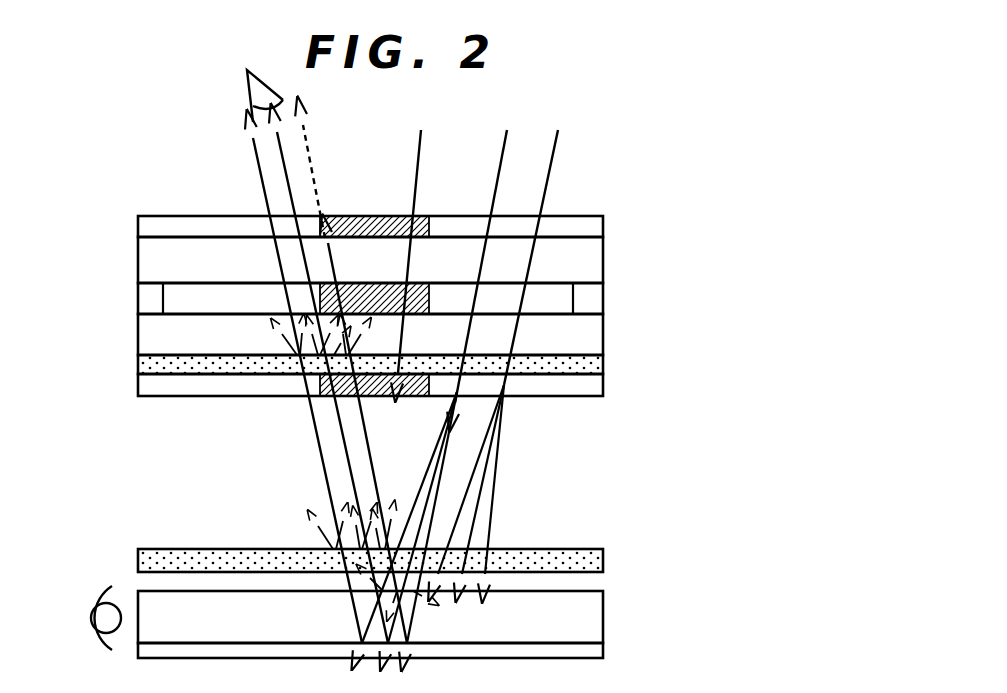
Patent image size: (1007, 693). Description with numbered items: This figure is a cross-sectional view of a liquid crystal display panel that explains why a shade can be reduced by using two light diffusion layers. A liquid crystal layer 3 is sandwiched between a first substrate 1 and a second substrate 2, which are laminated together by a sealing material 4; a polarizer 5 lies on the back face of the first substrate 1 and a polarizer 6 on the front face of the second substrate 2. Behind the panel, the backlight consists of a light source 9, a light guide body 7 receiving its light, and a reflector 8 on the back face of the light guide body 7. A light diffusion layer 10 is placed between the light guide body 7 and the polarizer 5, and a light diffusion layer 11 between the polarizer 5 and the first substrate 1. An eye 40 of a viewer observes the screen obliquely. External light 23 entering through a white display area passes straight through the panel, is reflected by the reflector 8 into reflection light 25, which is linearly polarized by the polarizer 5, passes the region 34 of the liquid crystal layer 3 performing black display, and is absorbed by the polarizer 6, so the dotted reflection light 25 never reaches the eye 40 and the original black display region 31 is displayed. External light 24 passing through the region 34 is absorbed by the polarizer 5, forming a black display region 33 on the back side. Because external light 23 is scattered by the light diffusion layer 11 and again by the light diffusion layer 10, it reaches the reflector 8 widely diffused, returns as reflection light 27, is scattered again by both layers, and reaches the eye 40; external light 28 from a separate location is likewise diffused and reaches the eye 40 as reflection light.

The first substrate 1 is at (595, 333).
The second substrate 2 is at (595, 265).
The liquid crystal layer 3 is at (557, 295).
The sealing material 4 is at (595, 300).
The polarizer 5 is at (595, 387).
The polarizer 6 is at (595, 228).
The light guide body 7 is at (595, 612).
The reflector 8 is at (595, 650).
The light source 9 is at (95, 618).
The light diffusion layer 10 is at (595, 560).
The light diffusion layer 11 is at (595, 365).
The external light 23 is at (442, 372).
The external light 24 is at (417, 237).
The reflection light 25 is at (342, 374).
The reflection light 27 is at (288, 390).
The external light 28 is at (506, 337).
The black display region 31 is at (350, 216).
The black display region 33 is at (397, 397).
The region 34 is at (376, 283).
The eye 40 is at (242, 88).